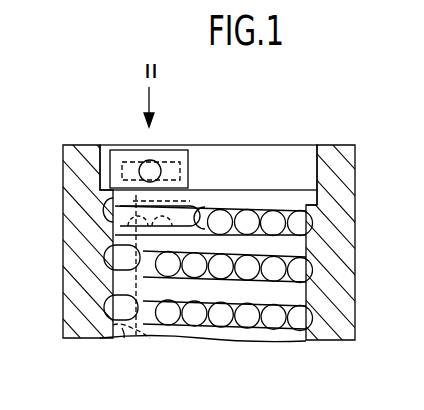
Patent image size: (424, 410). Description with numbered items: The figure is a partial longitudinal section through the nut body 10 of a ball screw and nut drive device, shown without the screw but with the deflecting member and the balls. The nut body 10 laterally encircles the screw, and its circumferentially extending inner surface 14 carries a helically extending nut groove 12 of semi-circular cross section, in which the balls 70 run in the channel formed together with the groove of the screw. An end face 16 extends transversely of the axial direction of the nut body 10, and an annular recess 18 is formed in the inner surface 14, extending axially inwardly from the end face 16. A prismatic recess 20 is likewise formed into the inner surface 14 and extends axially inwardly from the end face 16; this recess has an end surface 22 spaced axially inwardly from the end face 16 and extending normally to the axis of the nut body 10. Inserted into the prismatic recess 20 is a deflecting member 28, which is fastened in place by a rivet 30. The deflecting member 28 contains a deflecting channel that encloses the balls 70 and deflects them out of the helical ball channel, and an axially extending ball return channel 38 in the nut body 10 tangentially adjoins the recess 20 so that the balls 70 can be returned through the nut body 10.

The nut body 10 is at (335, 270).
The nut groove 12 is at (317, 322).
The inner surface 14 is at (309, 205).
The end face 16 is at (331, 145).
The annular recess 18 is at (314, 164).
The prismatic recess 20 is at (114, 142).
The end surface 22 is at (150, 250).
The deflecting member 28 is at (128, 155).
The rivet 30 is at (162, 167).
The ball return channel 38 is at (150, 327).
The balls 70 is at (245, 218).